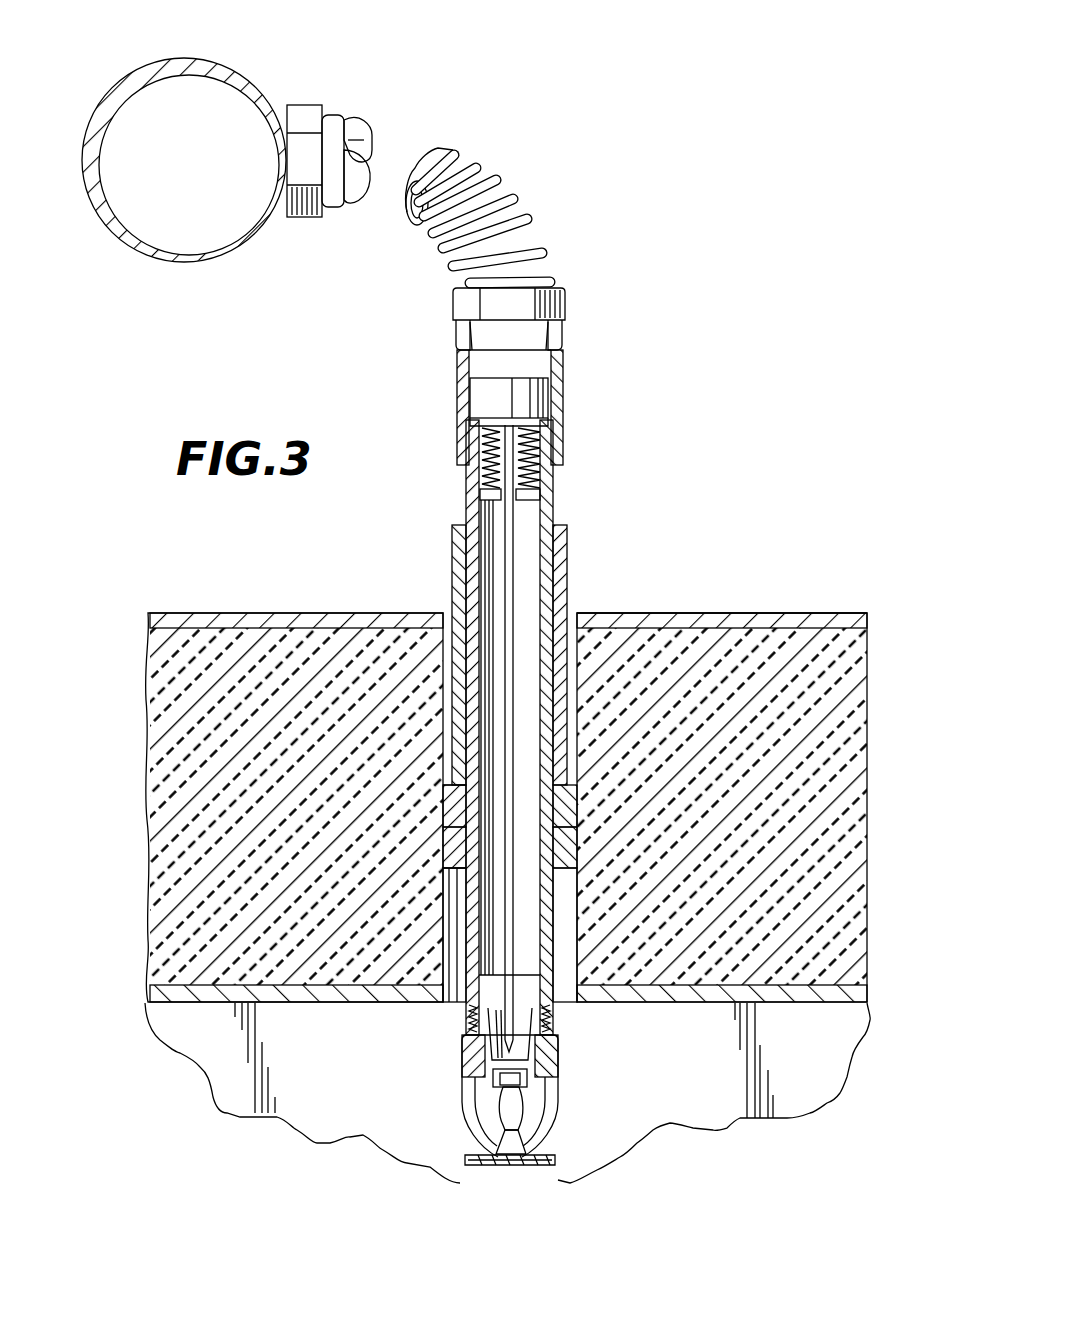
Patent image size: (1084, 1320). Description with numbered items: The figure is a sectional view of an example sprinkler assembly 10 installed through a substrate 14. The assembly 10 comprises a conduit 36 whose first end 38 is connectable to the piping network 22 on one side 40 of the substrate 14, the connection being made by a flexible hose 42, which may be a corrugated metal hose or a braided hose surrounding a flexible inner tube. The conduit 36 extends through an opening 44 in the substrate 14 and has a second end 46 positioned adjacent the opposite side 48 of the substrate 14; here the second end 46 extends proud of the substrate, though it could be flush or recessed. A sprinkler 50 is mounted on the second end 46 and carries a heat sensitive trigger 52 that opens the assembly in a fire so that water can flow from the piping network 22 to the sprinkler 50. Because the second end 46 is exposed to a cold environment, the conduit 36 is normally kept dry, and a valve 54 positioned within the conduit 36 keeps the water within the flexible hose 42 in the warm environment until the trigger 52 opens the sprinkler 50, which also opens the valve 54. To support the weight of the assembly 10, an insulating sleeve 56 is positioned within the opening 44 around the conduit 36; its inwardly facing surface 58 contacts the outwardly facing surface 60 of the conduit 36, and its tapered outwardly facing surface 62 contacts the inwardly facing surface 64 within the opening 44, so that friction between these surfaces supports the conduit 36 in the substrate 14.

The sprinkler assembly 10 is at (745, 490).
The substrate 14 is at (850, 677).
The piping network 22 is at (190, 263).
The conduit 36 is at (558, 513).
The first end 38 is at (563, 388).
The one side 40 is at (781, 593).
The flexible hose 42 is at (527, 207).
The opening 44 is at (573, 638).
The second end 46 is at (560, 1020).
The opposite side 48 is at (360, 1069).
The sprinkler 50 is at (560, 1078).
The heat sensitive trigger 52 is at (512, 1113).
The valve 54 is at (557, 422).
The sleeve 56 is at (563, 818).
The inwardly facing surface 58 is at (553, 860).
The outwardly facing surface 60 is at (553, 913).
The outwardly facing surface 62 is at (442, 850).
The inwardly facing surface 64 is at (453, 913).